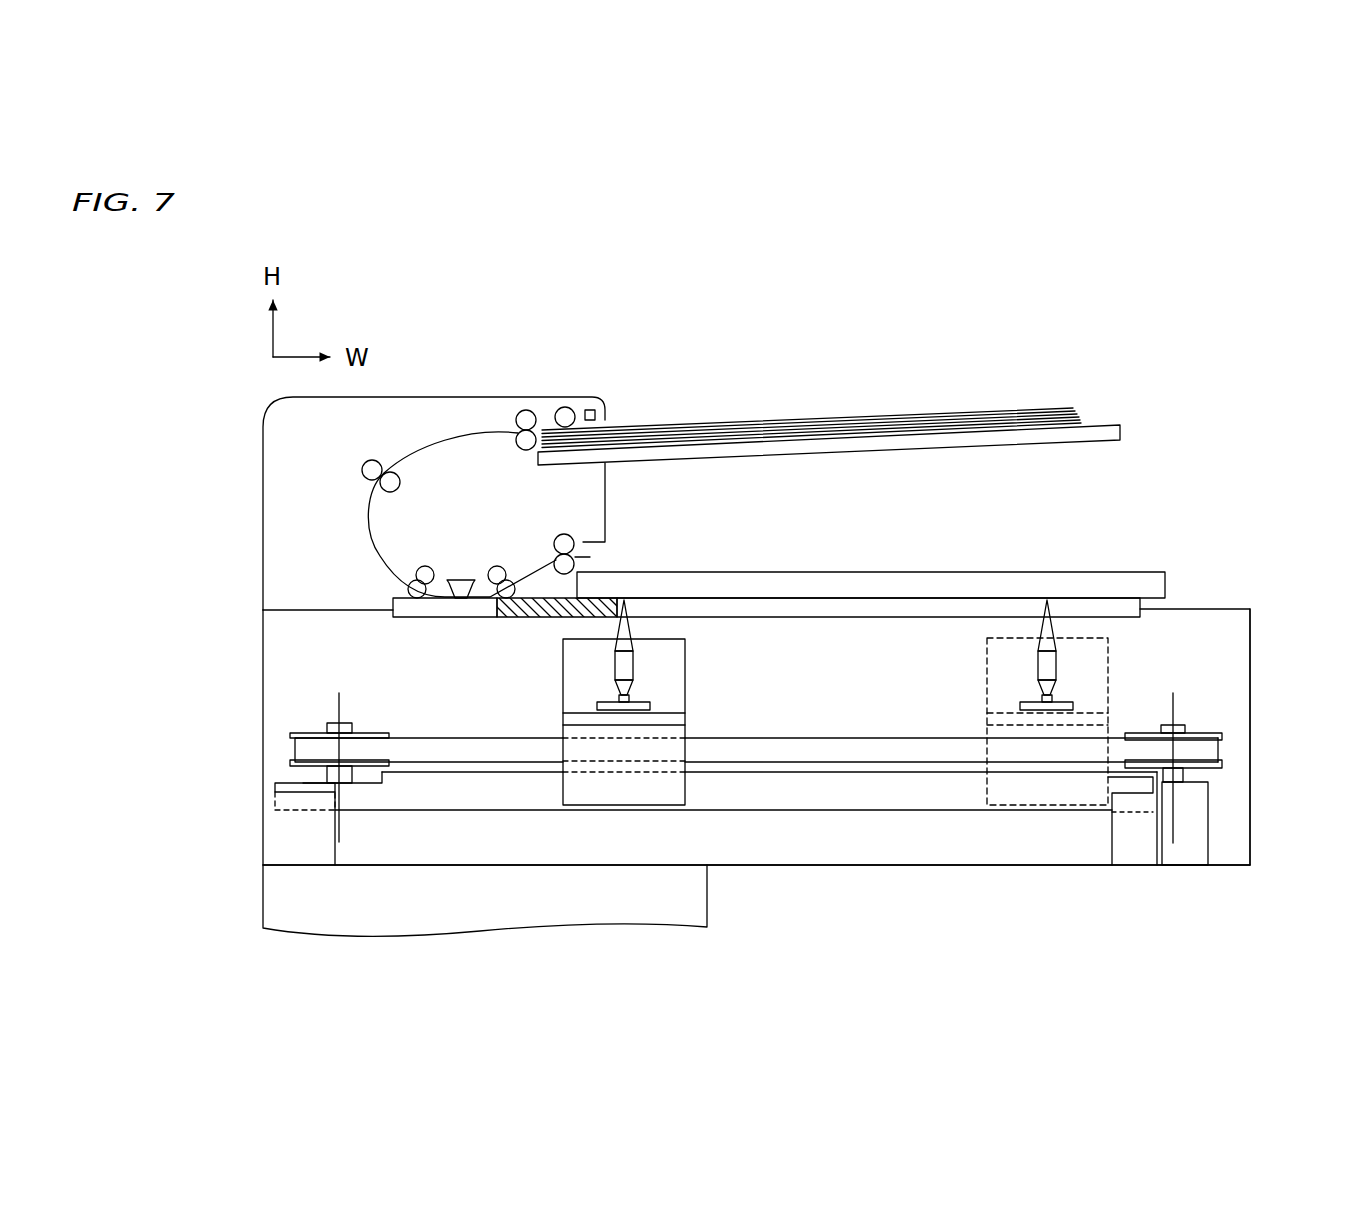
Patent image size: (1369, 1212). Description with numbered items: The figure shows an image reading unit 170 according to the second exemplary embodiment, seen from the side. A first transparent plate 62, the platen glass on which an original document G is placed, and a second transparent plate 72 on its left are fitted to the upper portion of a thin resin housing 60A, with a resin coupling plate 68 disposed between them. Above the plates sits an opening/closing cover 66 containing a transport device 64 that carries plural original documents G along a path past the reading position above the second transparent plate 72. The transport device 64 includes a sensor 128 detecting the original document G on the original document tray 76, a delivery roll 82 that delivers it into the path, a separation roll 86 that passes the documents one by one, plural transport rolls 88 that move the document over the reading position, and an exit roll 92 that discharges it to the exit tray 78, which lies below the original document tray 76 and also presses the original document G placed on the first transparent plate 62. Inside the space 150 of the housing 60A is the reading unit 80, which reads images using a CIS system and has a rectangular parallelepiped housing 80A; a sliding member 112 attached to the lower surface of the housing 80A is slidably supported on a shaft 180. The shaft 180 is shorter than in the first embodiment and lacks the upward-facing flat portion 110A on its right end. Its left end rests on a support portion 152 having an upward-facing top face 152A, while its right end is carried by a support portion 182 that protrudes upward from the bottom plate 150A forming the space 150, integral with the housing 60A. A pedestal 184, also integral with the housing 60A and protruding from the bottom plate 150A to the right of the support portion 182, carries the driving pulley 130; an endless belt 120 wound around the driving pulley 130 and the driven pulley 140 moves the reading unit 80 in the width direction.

The housing 60A is at (1252, 704).
The first transparent plate 62 is at (1118, 619).
The transport device 64 is at (422, 416).
The opening/closing cover 66 is at (243, 452).
The coupling plate 68 is at (495, 618).
The second transparent plate 72 is at (393, 618).
The original document tray 76 is at (1121, 443).
The exit tray 78 is at (1118, 571).
The reading unit 80 is at (883, 702).
The housing 80A is at (686, 692).
The delivery roll 82 is at (565, 405).
The separation roll 86 is at (527, 408).
The transport rolls 88 is at (361, 471).
The exit roll 92 is at (563, 533).
The flat portion 110A is at (288, 782).
The sliding member 112 is at (694, 754).
The endless belt 120 is at (447, 736).
The sensor 128 is at (593, 404).
The driving pulley 130 is at (1204, 714).
The driven pulley 140 is at (315, 712).
The space 150 is at (1228, 635).
The bottom plate 150A is at (998, 866).
The support portion 152 is at (339, 845).
The top face 152A is at (270, 788).
The image reading unit 170 is at (1256, 416).
The shaft 180 is at (768, 813).
The support portion 182 is at (1110, 848).
The pedestal 184 is at (1210, 826).
The original document G is at (915, 408).